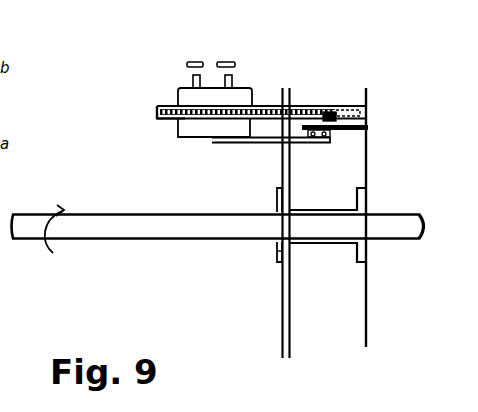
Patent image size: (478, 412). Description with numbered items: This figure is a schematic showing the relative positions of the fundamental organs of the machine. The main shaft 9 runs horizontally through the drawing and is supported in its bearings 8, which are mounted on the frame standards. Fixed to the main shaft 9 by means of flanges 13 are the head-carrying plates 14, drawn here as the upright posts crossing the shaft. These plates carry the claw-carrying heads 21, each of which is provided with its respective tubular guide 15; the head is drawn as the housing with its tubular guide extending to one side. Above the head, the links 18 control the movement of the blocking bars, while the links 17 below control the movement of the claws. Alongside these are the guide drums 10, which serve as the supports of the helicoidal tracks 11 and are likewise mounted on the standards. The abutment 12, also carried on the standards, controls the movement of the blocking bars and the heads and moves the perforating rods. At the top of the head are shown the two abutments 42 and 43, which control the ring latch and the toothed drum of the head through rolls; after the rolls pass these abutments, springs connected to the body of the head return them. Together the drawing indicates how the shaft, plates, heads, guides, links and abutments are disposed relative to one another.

The bearings 8 is at (347, 212).
The main shaft 9 is at (218, 240).
The guide drums 10 is at (350, 140).
The helicoidal tracks 11 is at (340, 107).
The abutment 12 is at (367, 98).
The flanges 13 is at (276, 258).
The head-carrying plates 14 is at (288, 293).
The tubular guides 15 is at (165, 120).
The links 17 is at (257, 143).
The links 18 is at (300, 106).
The claw-carrying heads 21 is at (202, 134).
The abutment 42 is at (235, 61).
The abutment 43 is at (197, 61).